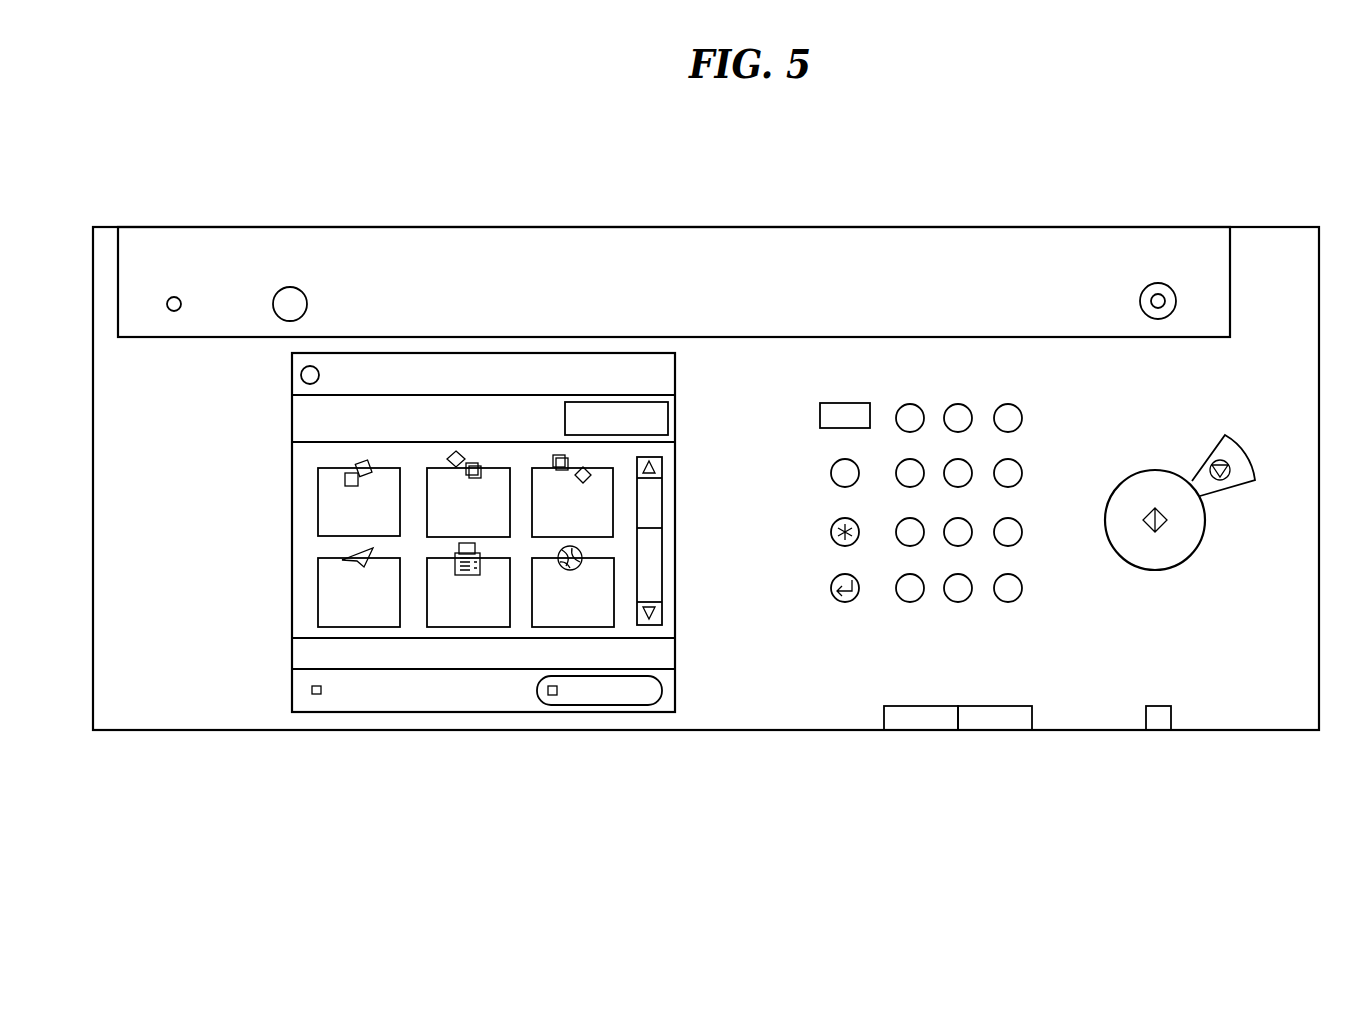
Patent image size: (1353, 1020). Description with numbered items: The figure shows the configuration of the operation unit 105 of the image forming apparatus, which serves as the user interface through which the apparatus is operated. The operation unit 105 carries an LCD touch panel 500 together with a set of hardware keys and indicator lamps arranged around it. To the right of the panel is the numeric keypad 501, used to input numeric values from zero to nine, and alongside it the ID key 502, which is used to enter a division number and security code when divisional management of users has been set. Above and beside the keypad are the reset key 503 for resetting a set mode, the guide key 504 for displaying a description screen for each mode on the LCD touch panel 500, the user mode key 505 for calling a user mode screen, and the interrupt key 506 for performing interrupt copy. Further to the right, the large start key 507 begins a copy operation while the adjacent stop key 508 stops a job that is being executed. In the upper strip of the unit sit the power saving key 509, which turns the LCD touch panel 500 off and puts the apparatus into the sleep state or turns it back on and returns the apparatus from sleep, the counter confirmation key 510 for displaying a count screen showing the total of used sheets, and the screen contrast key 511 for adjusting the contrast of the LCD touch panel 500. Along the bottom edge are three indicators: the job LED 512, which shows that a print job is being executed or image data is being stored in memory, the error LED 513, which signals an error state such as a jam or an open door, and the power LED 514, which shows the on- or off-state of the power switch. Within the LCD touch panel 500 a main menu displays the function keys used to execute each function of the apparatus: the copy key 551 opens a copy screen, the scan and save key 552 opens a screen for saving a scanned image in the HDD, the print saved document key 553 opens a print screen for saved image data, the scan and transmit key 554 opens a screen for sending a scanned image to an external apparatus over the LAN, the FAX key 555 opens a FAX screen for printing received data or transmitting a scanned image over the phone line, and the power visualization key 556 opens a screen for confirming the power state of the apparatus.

The operation unit 105 is at (145, 695).
The LCD touch panel 500 is at (430, 713).
The numeric keypad 501 is at (960, 404).
The ID key 502 is at (896, 588).
The reset key 503 is at (820, 415).
The guide key 504 is at (831, 473).
The user mode key 505 is at (831, 532).
The interrupt key 506 is at (845, 602).
The start key 507 is at (1116, 554).
The stop key 508 is at (1240, 486).
The power saving key 509 is at (1158, 283).
The counter confirmation key 510 is at (167, 304).
The screen contrast key 511 is at (273, 304).
The job LED 512 is at (920, 716).
The error LED 513 is at (997, 716).
The power LED 514 is at (1158, 716).
The copy key 551 is at (318, 496).
The scan and save key 552 is at (510, 524).
The print saved document key 553 is at (543, 466).
The scan and transmit key 554 is at (318, 612).
The FAX key 555 is at (490, 627).
The power visualization key 556 is at (614, 612).